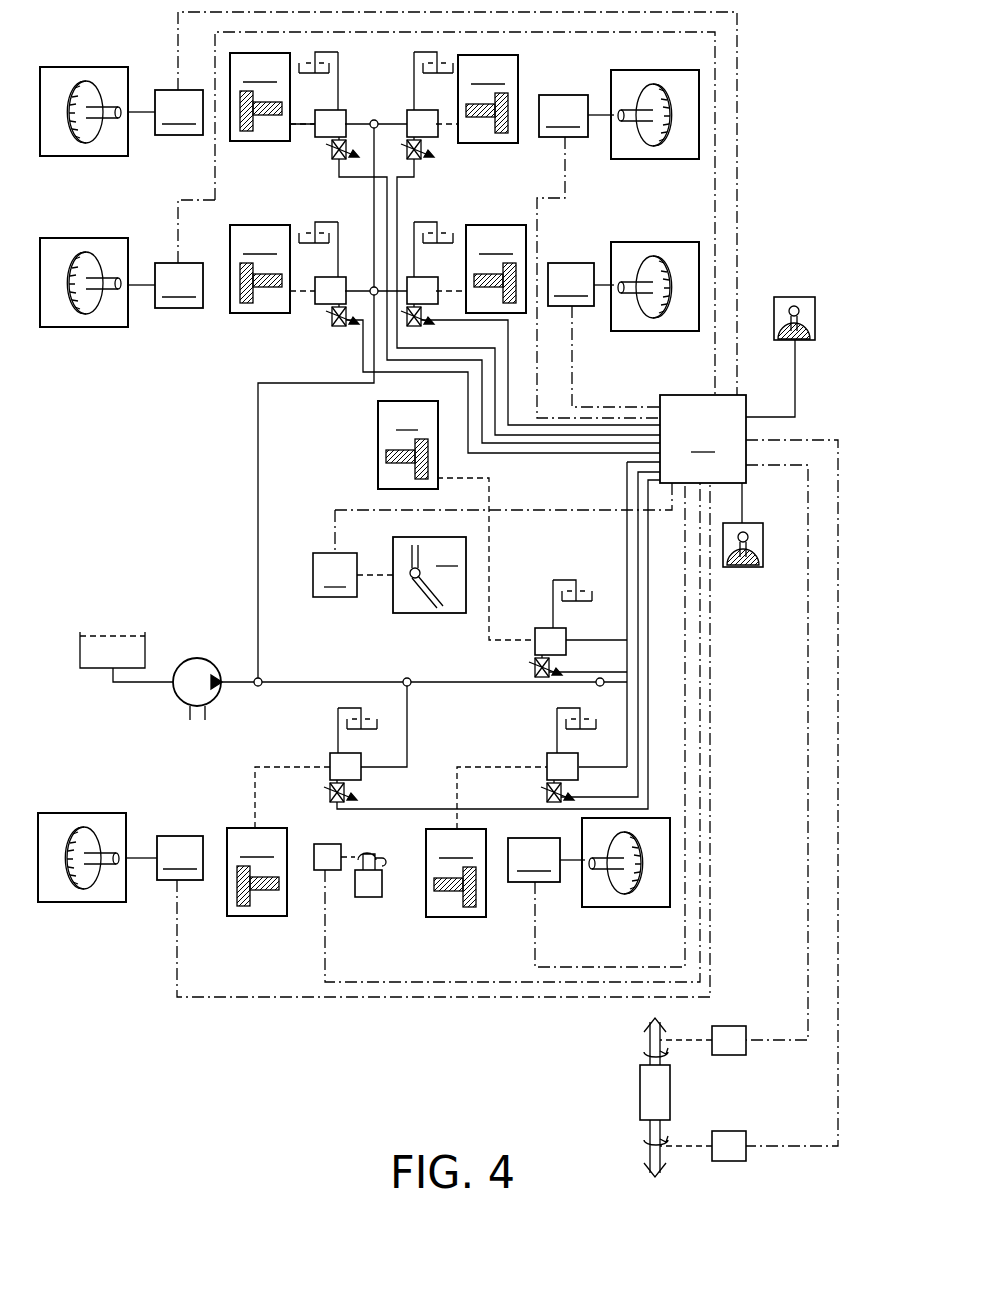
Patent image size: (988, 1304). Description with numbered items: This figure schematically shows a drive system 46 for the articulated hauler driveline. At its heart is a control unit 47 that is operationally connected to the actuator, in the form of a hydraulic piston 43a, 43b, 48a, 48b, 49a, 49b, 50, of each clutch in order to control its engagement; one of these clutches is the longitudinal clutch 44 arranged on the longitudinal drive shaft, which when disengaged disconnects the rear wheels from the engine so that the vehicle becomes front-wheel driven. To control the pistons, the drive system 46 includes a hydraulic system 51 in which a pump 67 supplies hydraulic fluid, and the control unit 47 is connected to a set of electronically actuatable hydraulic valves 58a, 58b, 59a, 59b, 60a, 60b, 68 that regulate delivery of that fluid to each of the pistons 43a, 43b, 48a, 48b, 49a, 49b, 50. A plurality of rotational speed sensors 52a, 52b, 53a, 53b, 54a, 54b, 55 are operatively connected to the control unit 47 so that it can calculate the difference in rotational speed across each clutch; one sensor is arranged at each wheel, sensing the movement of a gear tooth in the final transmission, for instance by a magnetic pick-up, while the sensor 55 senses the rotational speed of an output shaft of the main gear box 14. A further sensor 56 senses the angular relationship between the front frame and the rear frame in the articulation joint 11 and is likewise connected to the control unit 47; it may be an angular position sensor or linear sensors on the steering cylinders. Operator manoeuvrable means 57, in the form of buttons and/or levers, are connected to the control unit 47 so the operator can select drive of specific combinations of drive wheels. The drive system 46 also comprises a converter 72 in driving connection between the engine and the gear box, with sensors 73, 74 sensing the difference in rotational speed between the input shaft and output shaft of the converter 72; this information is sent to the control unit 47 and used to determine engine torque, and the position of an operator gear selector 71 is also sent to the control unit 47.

The articulation joint 11 is at (429, 575).
The main gear box 14 is at (366, 897).
The actuator (hydraulic piston) 43a is at (456, 873).
The actuator (hydraulic piston) 43b is at (257, 872).
The longitudinal clutch 44 is at (343, 428).
The drive system 46 is at (113, 990).
The control unit 47 is at (749, 770).
The actuator (hydraulic piston) 48a is at (496, 269).
The actuator (hydraulic piston) 48b is at (260, 269).
The actuator (hydraulic piston) 49a is at (488, 99).
The actuator (hydraulic piston) 49b is at (260, 97).
The actuator (hydraulic piston) 50 is at (503, 520).
The hydraulic system 51 is at (154, 730).
The rotational speed sensor 52a is at (596, 725).
The rotational speed sensor 52b is at (120, 857).
The rotational speed sensor 53a is at (623, 324).
The rotational speed sensor 53b is at (121, 282).
The rotational speed sensor 54a is at (618, 244).
The rotational speed sensor 54b is at (121, 111).
The rotational speed sensor 55 is at (333, 870).
The angular position sensor 56 is at (353, 575).
The operator manoeuvrable means 57 is at (735, 567).
The electronically actuatable hydraulic valve 58a is at (547, 757).
The electronically actuatable hydraulic valve 58b is at (330, 757).
The electronically actuatable hydraulic valve 59a is at (438, 282).
The electronically actuatable hydraulic valve 59b is at (322, 327).
The electronically actuatable hydraulic valve 60a is at (430, 140).
The electronically actuatable hydraulic valve 60b is at (340, 115).
The pump 67 is at (188, 658).
The electronically actuatable hydraulic valve 68 is at (536, 645).
The operator gear selector 71 is at (785, 297).
The converter 72 is at (640, 1090).
The sensor 73 is at (730, 1161).
The sensor 74 is at (735, 1026).